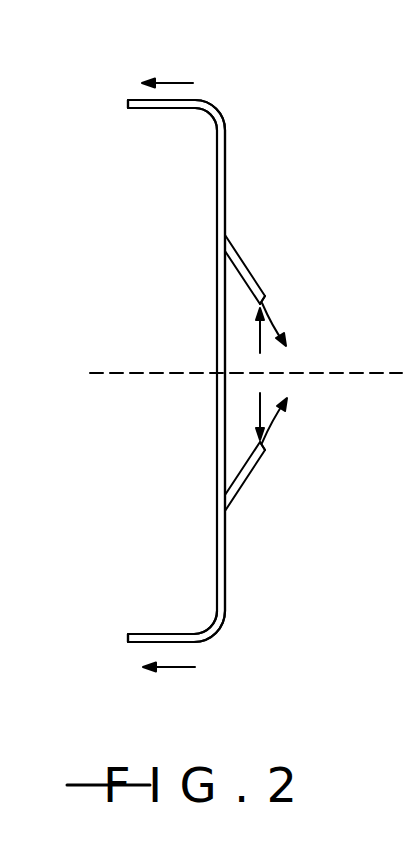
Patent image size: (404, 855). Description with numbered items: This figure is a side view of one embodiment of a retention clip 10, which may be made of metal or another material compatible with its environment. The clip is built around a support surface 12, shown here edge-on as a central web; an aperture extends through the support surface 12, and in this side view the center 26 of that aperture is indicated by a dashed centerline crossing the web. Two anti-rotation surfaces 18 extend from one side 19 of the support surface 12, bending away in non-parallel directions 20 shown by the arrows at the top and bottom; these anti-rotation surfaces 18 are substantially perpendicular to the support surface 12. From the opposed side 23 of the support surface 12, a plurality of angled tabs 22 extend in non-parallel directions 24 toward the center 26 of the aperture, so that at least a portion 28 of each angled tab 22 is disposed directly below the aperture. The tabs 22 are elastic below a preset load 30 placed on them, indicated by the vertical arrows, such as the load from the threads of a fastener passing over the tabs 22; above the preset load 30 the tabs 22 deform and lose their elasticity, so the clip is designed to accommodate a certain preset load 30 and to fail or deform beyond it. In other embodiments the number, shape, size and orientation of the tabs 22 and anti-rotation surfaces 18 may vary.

The retention clip 10 is at (275, 114).
The support surface 12 is at (217, 165).
The anti-rotation surfaces 18 is at (137, 100).
The side of the support surface 19 is at (217, 143).
The non-parallel directions 20 is at (173, 82).
The angled tabs 22 is at (248, 268).
The opposed side of the support surface 23 is at (225, 183).
The non-parallel directions 24 is at (278, 326).
The center of the aperture 26 is at (352, 373).
The portion of angled tab 28 is at (258, 299).
The preset load 30 is at (257, 336).